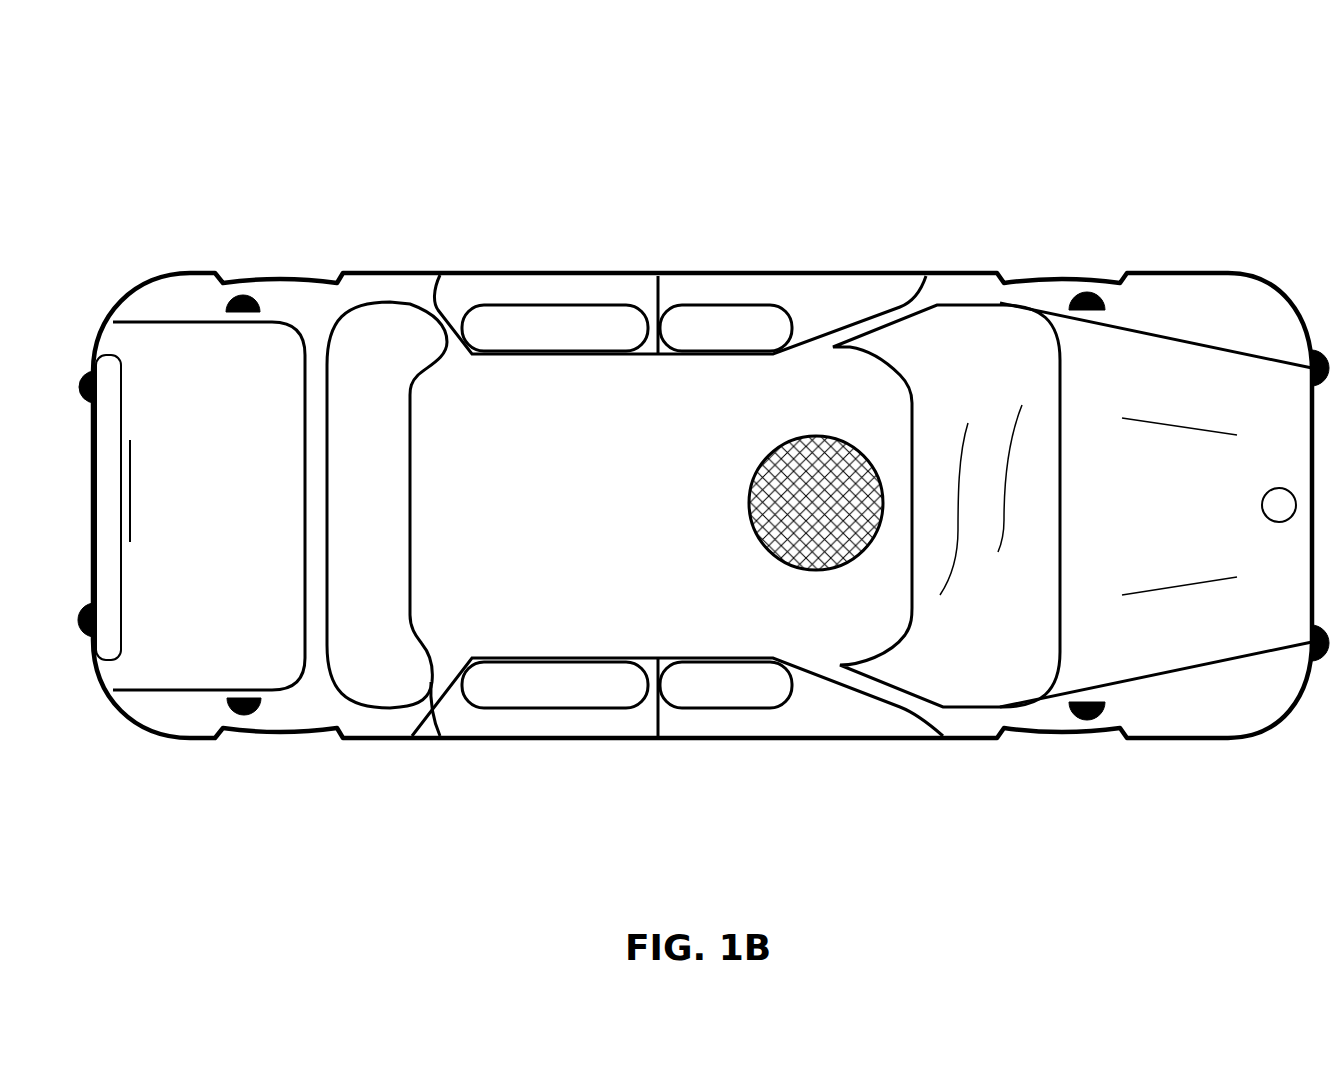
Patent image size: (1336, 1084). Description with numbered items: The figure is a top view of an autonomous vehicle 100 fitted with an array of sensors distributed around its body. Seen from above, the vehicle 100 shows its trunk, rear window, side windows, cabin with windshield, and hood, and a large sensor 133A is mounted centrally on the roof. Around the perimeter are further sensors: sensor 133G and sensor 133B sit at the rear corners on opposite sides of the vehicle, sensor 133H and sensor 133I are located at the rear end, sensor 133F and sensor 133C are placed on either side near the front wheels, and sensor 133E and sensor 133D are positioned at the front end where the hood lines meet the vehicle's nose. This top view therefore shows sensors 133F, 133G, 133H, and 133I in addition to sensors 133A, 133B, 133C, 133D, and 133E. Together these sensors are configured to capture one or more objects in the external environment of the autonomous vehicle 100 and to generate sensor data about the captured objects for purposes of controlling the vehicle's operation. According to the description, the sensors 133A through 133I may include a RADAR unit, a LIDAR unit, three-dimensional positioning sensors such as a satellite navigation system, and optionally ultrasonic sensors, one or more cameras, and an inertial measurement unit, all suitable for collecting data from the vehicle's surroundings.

The autonomous vehicle 100 is at (1187, 105).
The sensor 133A is at (764, 453).
The sensor 133B is at (261, 700).
The sensor 133C is at (1105, 705).
The sensor 133D is at (1310, 638).
The sensor 133E is at (1310, 370).
The sensor 133F is at (1105, 308).
The sensor 133G is at (261, 310).
The sensor 133H is at (95, 388).
The sensor 133I is at (95, 620).